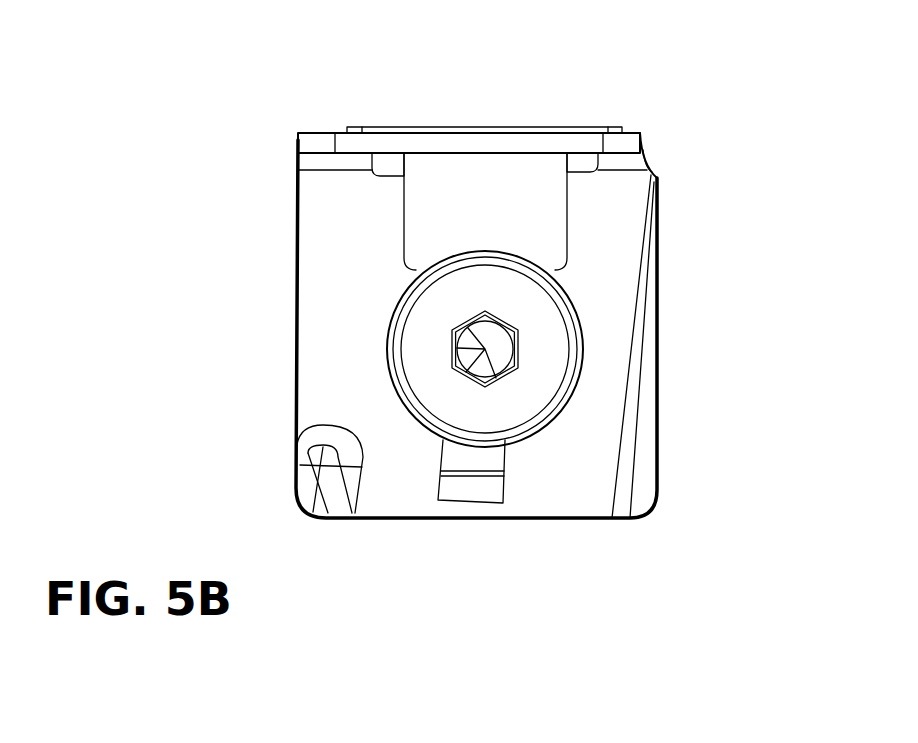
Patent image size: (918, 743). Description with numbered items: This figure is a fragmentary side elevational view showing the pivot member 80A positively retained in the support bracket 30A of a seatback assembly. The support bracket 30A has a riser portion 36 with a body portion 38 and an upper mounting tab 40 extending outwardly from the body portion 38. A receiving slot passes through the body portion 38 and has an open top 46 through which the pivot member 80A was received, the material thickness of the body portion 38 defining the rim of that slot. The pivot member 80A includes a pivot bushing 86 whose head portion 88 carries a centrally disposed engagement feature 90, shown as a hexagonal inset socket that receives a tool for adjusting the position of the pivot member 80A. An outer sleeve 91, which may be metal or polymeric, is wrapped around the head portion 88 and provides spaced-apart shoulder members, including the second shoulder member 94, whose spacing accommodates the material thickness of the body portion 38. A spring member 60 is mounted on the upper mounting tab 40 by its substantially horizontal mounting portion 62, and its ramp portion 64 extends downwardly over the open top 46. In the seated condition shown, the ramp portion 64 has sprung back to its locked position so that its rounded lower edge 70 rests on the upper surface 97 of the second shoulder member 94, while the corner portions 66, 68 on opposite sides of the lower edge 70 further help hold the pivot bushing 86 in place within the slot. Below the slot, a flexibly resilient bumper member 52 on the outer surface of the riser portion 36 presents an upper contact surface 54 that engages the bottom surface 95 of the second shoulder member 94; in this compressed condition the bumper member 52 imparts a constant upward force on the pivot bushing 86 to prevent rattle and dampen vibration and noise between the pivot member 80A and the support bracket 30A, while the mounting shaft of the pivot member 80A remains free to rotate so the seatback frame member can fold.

The support bracket 30A is at (268, 115).
The riser portion 36 is at (240, 157).
The body portion 38 is at (330, 203).
The upper mounting tab 40 is at (633, 143).
The open top 46 is at (388, 150).
The bumper member 52 is at (492, 490).
The upper contact surface 54 is at (477, 450).
The spring member 60 is at (467, 105).
The mounting portion 62 is at (516, 127).
The ramp portion 64 is at (523, 205).
The corner portion 66 is at (413, 263).
The corner portion 68 is at (577, 273).
The lower edge 70 is at (502, 253).
The pivot member 80A is at (603, 380).
The pivot bushing 86 is at (603, 348).
The head portion 88 is at (443, 387).
The engagement feature 90 is at (470, 338).
The outer sleeve 91 is at (603, 313).
The second shoulder member 94 is at (393, 382).
The bottom surface 95 is at (498, 440).
The upper surface 97 is at (465, 277).